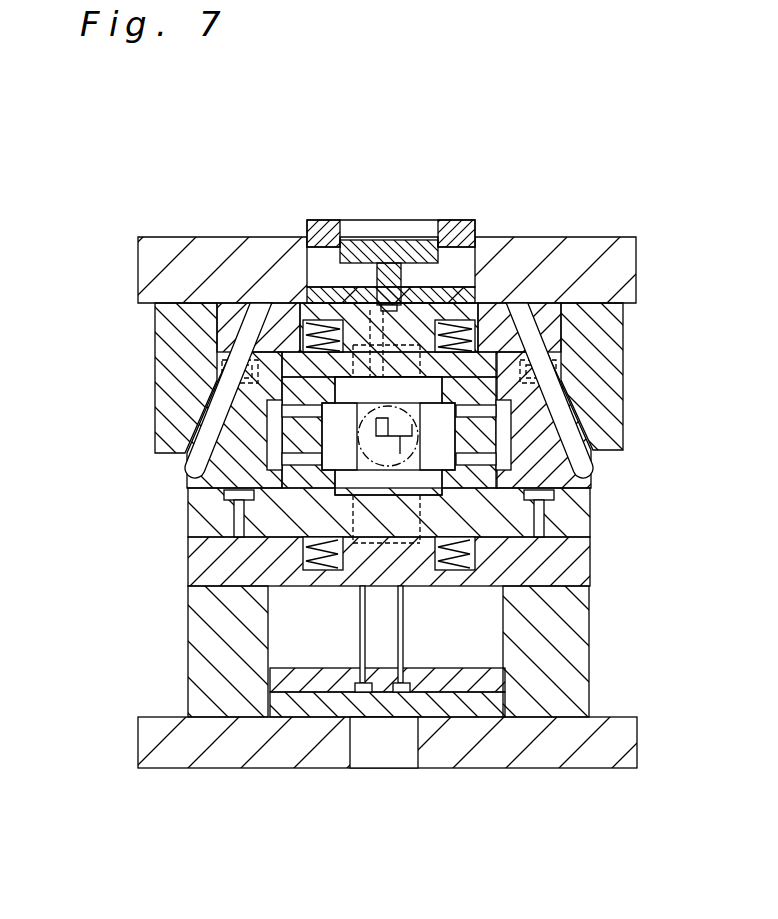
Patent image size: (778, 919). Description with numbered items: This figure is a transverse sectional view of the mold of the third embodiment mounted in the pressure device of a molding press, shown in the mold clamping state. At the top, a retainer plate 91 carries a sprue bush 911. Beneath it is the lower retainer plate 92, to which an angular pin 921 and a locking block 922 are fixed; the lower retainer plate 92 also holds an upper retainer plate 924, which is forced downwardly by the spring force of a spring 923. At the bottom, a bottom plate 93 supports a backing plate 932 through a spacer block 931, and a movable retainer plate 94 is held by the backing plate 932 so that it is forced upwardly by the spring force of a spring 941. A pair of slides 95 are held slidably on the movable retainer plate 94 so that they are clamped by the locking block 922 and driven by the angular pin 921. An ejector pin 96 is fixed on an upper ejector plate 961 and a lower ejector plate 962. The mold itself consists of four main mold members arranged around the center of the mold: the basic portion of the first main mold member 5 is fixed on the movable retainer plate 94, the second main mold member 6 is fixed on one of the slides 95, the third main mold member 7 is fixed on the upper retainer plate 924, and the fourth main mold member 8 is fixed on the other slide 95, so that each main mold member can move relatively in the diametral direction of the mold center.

The retainer plate 91 is at (160, 248).
The lower retainer plate 92 is at (232, 315).
The upper retainer plate 924 is at (297, 357).
The sprue bush 911 is at (410, 237).
The spring 923 is at (482, 322).
The locking block 922 is at (175, 362).
The slides 95 is at (202, 415).
The angular pin 921 is at (202, 477).
The movable retainer plate 94 is at (205, 517).
The backing plate 932 is at (202, 557).
The spacer block 931 is at (202, 636).
The bottom plate 93 is at (152, 738).
The spring 941 is at (560, 562).
The lower ejector plate 962 is at (283, 682).
The upper ejector plate 961 is at (328, 705).
The ejector pin 96 is at (370, 690).
The first main mold member 5 is at (373, 496).
The second main mold member 6 is at (342, 446).
The third main mold member 7 is at (388, 392).
The fourth main mold member 8 is at (447, 446).